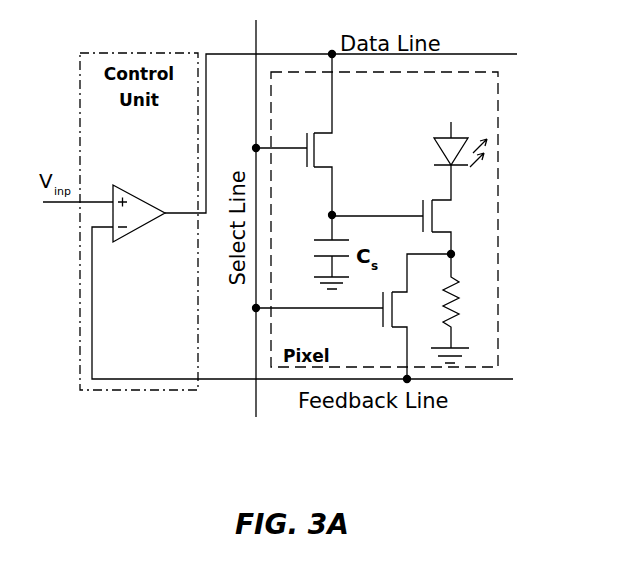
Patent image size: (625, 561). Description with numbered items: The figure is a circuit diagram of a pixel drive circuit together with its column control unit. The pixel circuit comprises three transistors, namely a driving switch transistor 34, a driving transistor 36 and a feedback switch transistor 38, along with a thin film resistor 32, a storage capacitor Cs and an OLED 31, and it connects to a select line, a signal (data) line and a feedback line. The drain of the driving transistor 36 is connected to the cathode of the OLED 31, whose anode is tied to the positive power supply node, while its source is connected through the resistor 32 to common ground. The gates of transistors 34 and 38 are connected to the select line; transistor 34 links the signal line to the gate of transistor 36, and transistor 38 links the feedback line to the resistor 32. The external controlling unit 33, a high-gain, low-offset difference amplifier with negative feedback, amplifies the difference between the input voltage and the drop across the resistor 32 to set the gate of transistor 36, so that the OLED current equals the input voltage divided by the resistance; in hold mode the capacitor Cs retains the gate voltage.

The OLED 31 is at (449, 150).
The resistor 32 is at (440, 296).
The external controlling unit 33 is at (120, 238).
The driving switch transistor 34 is at (337, 150).
The driving transistor 36 is at (445, 217).
The feedback switch transistor 38 is at (402, 305).